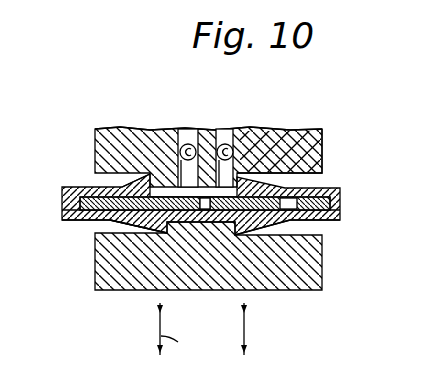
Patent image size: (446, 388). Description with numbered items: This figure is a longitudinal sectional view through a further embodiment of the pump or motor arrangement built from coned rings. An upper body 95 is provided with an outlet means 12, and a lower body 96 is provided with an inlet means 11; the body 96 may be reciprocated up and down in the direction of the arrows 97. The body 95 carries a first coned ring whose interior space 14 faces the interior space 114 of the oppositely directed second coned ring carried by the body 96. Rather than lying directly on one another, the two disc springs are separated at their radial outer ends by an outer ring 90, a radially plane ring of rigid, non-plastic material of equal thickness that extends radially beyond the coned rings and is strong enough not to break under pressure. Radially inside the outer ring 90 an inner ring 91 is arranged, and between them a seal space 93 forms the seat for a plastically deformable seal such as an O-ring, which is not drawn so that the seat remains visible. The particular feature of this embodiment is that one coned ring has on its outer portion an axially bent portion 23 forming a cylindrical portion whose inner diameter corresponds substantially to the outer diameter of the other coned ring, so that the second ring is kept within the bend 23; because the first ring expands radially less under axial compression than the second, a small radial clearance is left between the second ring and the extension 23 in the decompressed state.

The body 95 is at (104, 146).
The body 96 is at (97, 279).
The interior space 14 is at (148, 128).
The interior space 114 is at (299, 130).
The inlet means 11 is at (194, 143).
The outlet means 12 is at (226, 143).
The axially bent portion 23 is at (80, 206).
The outer ring 90 is at (112, 222).
The inner ring 91 is at (150, 228).
The seal space 93 is at (201, 212).
The arrows 97 is at (246, 340).